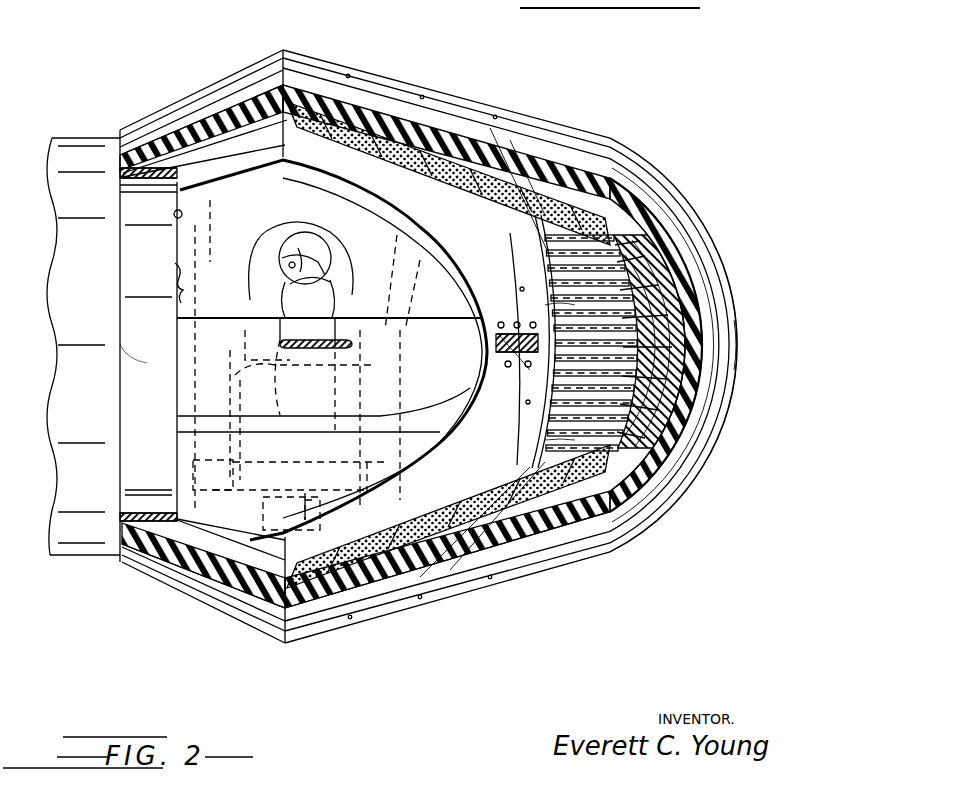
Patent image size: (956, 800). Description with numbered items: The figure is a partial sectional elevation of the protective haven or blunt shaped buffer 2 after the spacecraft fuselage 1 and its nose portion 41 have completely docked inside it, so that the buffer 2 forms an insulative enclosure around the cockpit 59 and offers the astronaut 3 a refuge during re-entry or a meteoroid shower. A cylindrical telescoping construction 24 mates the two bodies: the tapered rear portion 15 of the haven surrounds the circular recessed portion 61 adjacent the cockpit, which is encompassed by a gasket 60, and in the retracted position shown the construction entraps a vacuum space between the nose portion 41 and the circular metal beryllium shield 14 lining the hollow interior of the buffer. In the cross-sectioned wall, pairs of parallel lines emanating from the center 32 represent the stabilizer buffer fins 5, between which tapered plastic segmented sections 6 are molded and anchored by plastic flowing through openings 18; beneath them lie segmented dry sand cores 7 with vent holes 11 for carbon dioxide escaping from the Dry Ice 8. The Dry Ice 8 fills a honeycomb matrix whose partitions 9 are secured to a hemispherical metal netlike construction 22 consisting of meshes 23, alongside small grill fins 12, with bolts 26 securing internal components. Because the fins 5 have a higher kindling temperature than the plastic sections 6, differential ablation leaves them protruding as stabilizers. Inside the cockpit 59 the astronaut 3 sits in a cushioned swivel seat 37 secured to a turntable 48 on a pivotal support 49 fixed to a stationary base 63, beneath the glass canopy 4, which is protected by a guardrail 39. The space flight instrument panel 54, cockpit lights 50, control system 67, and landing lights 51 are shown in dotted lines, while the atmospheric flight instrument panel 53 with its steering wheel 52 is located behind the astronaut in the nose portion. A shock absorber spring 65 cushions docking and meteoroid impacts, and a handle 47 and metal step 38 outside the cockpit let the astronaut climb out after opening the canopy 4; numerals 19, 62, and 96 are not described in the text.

The spacecraft fuselage 1 is at (80, 118).
The protective haven or blunt shaped buffer 2 is at (586, 118).
The astronaut 3 is at (323, 228).
The glass canopy 4 is at (332, 350).
The stabilizer buffer fins 5 is at (640, 215).
The plastic segmented sections 6 is at (610, 190).
The segmented dry sand cores 7 is at (452, 175).
The Dry Ice 8 is at (575, 392).
The partitions 9 is at (580, 318).
The vent holes 11 is at (422, 96).
The grill fins 12 is at (663, 263).
The circular metal beryllium shield 14 is at (310, 130).
The tapered rear portion 15 is at (157, 110).
The openings 18 is at (650, 217).
The lower support 19 is at (560, 433).
The metal netlike construction 22 is at (562, 363).
The meshes 23 is at (522, 332).
The cylindrical telescoping construction 24 is at (123, 176).
The bolts 26 is at (510, 234).
The center 32 is at (700, 352).
The swivel seat 37 is at (307, 261).
The metal step 38 is at (177, 417).
The guardrail 39 is at (412, 222).
The nose portion 41 is at (401, 417).
The handle 47 is at (352, 347).
The turntable 48 is at (370, 455).
The pivotal support 49 is at (262, 507).
The cockpit lights 50 is at (178, 212).
The landing lights 51 is at (177, 303).
The steering wheel 52 is at (402, 282).
The atmospheric flight instrument panel 53 is at (470, 265).
The space flight instrument panel 54 is at (217, 355).
The cockpit 59 is at (265, 323).
The gasket 60 is at (150, 172).
The circular recessed portion 61 is at (147, 363).
The corner joint 62 is at (287, 47).
The stationary base 63 is at (322, 507).
The shock absorber spring 65 is at (526, 297).
The control system 67 is at (210, 370).
The floor beam 96 is at (255, 540).